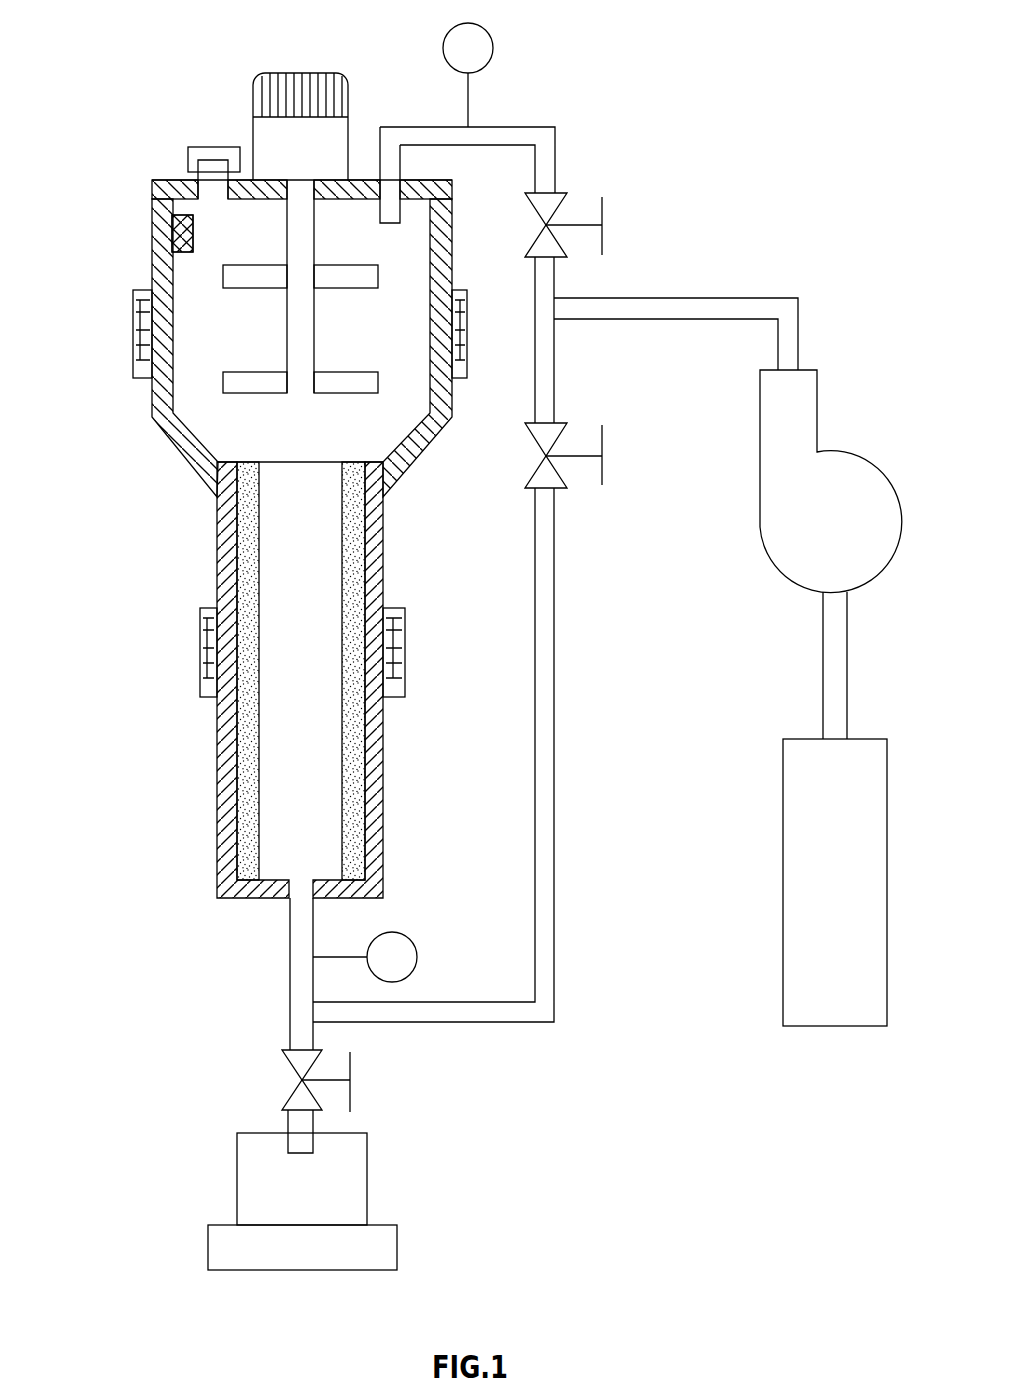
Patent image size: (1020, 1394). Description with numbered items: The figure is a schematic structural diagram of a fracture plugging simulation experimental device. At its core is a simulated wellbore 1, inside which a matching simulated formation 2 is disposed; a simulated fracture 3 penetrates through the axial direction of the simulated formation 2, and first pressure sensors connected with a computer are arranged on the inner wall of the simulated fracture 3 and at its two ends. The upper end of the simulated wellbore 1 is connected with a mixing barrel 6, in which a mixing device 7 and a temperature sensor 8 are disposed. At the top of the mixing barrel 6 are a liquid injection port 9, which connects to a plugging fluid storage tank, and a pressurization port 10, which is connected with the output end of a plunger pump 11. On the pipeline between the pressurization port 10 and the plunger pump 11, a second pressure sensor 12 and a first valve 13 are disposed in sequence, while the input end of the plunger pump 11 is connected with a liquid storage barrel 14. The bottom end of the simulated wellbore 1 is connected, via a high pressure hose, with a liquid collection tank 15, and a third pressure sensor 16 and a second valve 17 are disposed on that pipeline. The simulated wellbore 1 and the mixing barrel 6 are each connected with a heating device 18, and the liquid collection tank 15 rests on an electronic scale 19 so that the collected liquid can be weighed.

The simulated wellbore 1 is at (217, 783).
The simulated formation 2 is at (217, 845).
The simulated fracture 3 is at (283, 530).
The mixing barrel 6 is at (152, 412).
The mixing device 7 is at (300, 73).
The temperature sensor 8 is at (172, 232).
The liquid injection port 9 is at (210, 163).
The pressurization port 10 is at (380, 183).
The plunger pump 11 is at (760, 525).
The second pressure sensor 12 is at (493, 48).
The first valve 13 is at (602, 210).
The liquid storage barrel 14 is at (783, 883).
The liquid collection tank 15 is at (237, 1180).
The third pressure sensor 16 is at (417, 957).
The second valve 17 is at (288, 1058).
The heating device 18 is at (133, 337).
The electronic scale 19 is at (208, 1247).